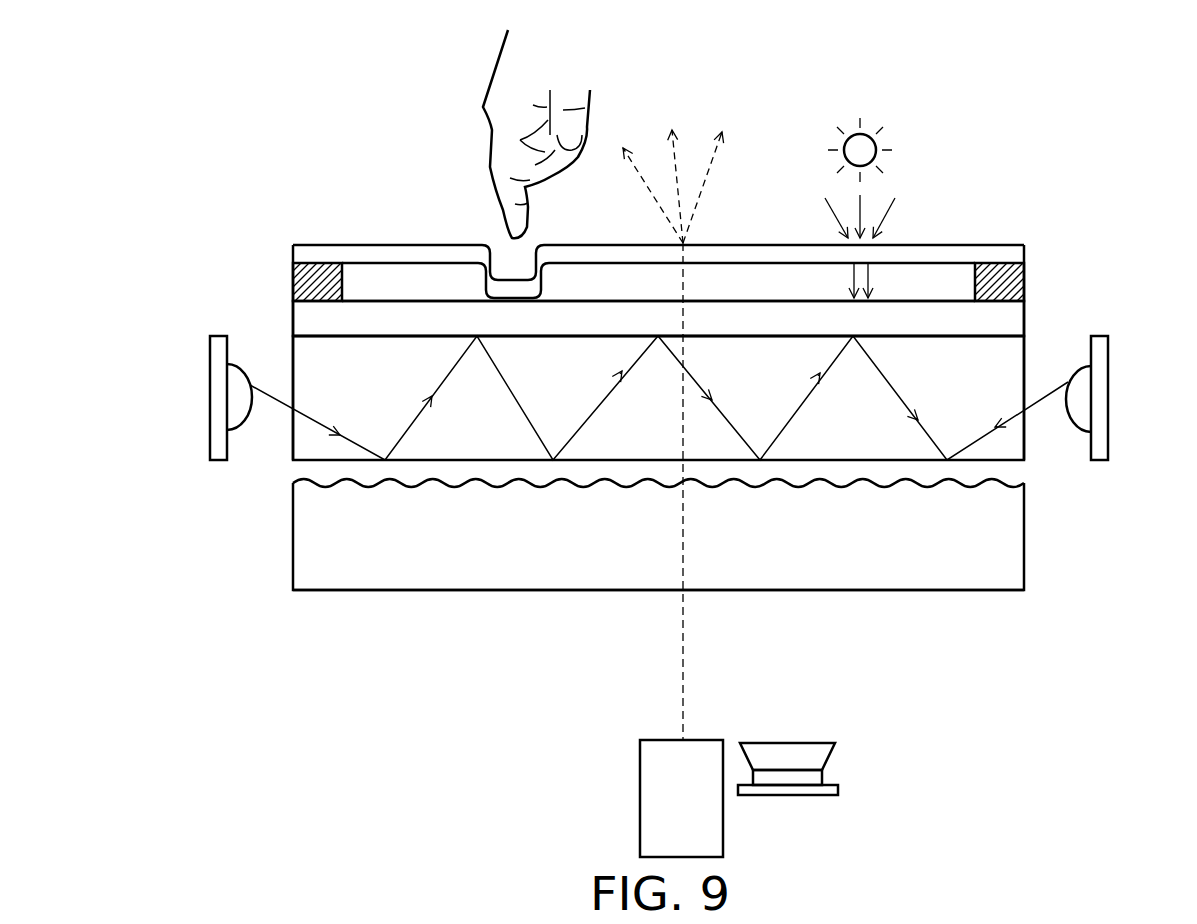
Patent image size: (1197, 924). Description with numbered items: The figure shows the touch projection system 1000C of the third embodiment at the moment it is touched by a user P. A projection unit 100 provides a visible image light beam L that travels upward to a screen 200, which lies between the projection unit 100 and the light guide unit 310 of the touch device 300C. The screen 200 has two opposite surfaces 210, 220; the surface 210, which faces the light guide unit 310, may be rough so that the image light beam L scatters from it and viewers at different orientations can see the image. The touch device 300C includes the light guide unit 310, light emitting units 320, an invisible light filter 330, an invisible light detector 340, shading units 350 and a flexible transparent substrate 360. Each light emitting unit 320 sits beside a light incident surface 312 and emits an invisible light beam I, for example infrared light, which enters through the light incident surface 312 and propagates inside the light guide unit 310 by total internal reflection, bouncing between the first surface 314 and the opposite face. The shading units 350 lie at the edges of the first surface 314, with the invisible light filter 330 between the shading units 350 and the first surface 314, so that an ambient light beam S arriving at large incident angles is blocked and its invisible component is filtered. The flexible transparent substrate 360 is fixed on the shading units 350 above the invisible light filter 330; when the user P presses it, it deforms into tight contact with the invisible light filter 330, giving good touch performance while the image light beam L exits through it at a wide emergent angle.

The touch projection system 1000C is at (1127, 870).
The touch device 300C is at (230, 648).
The light guide unit 310 is at (1013, 348).
The light incident surface 312 is at (292, 375).
The first surface 314 is at (321, 333).
The light emitting unit 320 is at (230, 398).
The invisible light filter 330 is at (1018, 315).
The invisible light detector 340 is at (808, 778).
The shading unit 350 is at (1025, 280).
The flexible transparent substrate 360 is at (1013, 252).
The screen 200 is at (1018, 557).
The surface 210 is at (994, 480).
The surface 220 is at (989, 593).
The projection unit 100 is at (650, 806).
The user P is at (490, 72).
The ambient light beam S is at (890, 205).
The image light beam L is at (683, 653).
The invisible light beam I is at (268, 415).